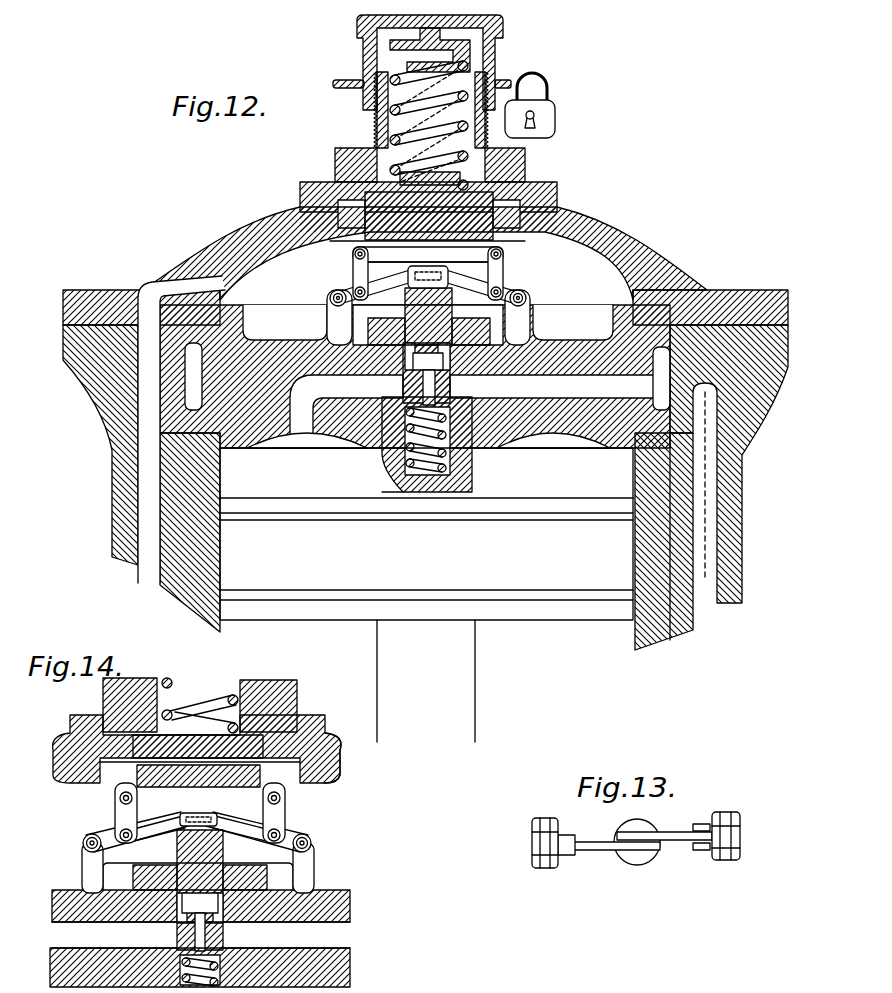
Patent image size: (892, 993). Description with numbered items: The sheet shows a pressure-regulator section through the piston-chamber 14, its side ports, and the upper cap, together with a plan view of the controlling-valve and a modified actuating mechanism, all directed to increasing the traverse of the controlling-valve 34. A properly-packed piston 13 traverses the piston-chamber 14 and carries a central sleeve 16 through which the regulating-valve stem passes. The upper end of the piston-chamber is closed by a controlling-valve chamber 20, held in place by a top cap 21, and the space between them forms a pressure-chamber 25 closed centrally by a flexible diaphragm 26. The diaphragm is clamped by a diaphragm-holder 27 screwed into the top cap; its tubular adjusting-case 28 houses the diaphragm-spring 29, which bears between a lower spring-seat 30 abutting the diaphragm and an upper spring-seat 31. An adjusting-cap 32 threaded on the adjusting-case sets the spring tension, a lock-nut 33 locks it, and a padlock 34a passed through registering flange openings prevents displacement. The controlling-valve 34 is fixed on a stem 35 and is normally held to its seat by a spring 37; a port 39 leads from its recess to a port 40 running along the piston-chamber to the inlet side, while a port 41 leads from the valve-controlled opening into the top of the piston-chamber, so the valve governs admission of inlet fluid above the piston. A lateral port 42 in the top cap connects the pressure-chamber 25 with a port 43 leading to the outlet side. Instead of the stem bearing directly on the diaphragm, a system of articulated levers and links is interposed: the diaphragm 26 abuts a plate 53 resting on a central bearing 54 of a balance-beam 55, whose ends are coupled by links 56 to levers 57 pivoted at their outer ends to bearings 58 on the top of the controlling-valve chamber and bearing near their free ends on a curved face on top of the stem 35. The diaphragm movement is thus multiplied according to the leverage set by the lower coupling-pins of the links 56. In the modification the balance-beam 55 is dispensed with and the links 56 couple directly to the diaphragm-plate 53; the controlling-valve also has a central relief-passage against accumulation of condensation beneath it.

In FIG. 12, the piston 13 is at (426, 534).
In FIG. 12, the piston-chamber 14 is at (222, 482).
In FIG. 12, the central sleeve 16 is at (442, 681).
In FIG. 12, the controlling-valve chamber 20 is at (310, 360).
In FIG. 12, the top cap 21 is at (425, 262).
In FIG. 14, the top cap 21 is at (342, 770).
In FIG. 12, the pressure-chamber 25 is at (428, 301).
In FIG. 12, the flexible diaphragm 26 is at (515, 228).
In FIG. 14, the flexible diaphragm 26 is at (297, 778).
In FIG. 12, the diaphragm-holder 27 is at (338, 175).
In FIG. 14, the diaphragm-holder 27 is at (97, 720).
In FIG. 12, the adjusting-case 28 is at (378, 134).
In FIG. 12, the diaphragm-spring 29 is at (386, 119).
In FIG. 14, the diaphragm-spring 29 is at (172, 681).
In FIG. 12, the lower spring-seat 30 is at (495, 202).
In FIG. 14, the lower spring-seat 30 is at (212, 722).
In FIG. 12, the upper spring-seat 31 is at (388, 66).
In FIG. 12, the adjusting-cap 32 is at (500, 48).
In FIG. 12, the lock-nut 33 is at (366, 99).
In FIG. 12, the controlling-valve 34 is at (452, 383).
In FIG. 14, the controlling-valve 34 is at (178, 941).
In FIG. 12, the padlock 34a is at (553, 105).
In FIG. 12, the stem 35 is at (455, 330).
In FIG. 14, the stem 35 is at (200, 876).
In FIG. 13, the stem 35 is at (633, 858).
In FIG. 12, the spring 37 is at (448, 452).
In FIG. 12, the port 39 is at (560, 378).
In FIG. 14, the port 39 is at (286, 936).
In FIG. 12, the port 40 is at (700, 537).
In FIG. 12, the port 41 is at (346, 409).
In FIG. 14, the port 41 is at (114, 936).
In FIG. 12, the lateral port 42 is at (205, 297).
In FIG. 12, the port 43 is at (148, 518).
In FIG. 12, the plate 53 is at (353, 248).
In FIG. 14, the plate 53 is at (195, 787).
In FIG. 12, the central bearing 54 is at (436, 266).
In FIG. 12, the balance-beam 55 is at (442, 257).
In FIG. 12, the links 56 is at (355, 274).
In FIG. 14, the links 56 is at (116, 822).
In FIG. 13, the links 56 is at (700, 832).
In FIG. 12, the levers 57 is at (368, 292).
In FIG. 14, the levers 57 is at (142, 842).
In FIG. 13, the levers 57 is at (598, 841).
In FIG. 12, the bearings 58 is at (331, 300).
In FIG. 14, the bearings 58 is at (80, 862).
In FIG. 13, the bearings 58 is at (530, 852).